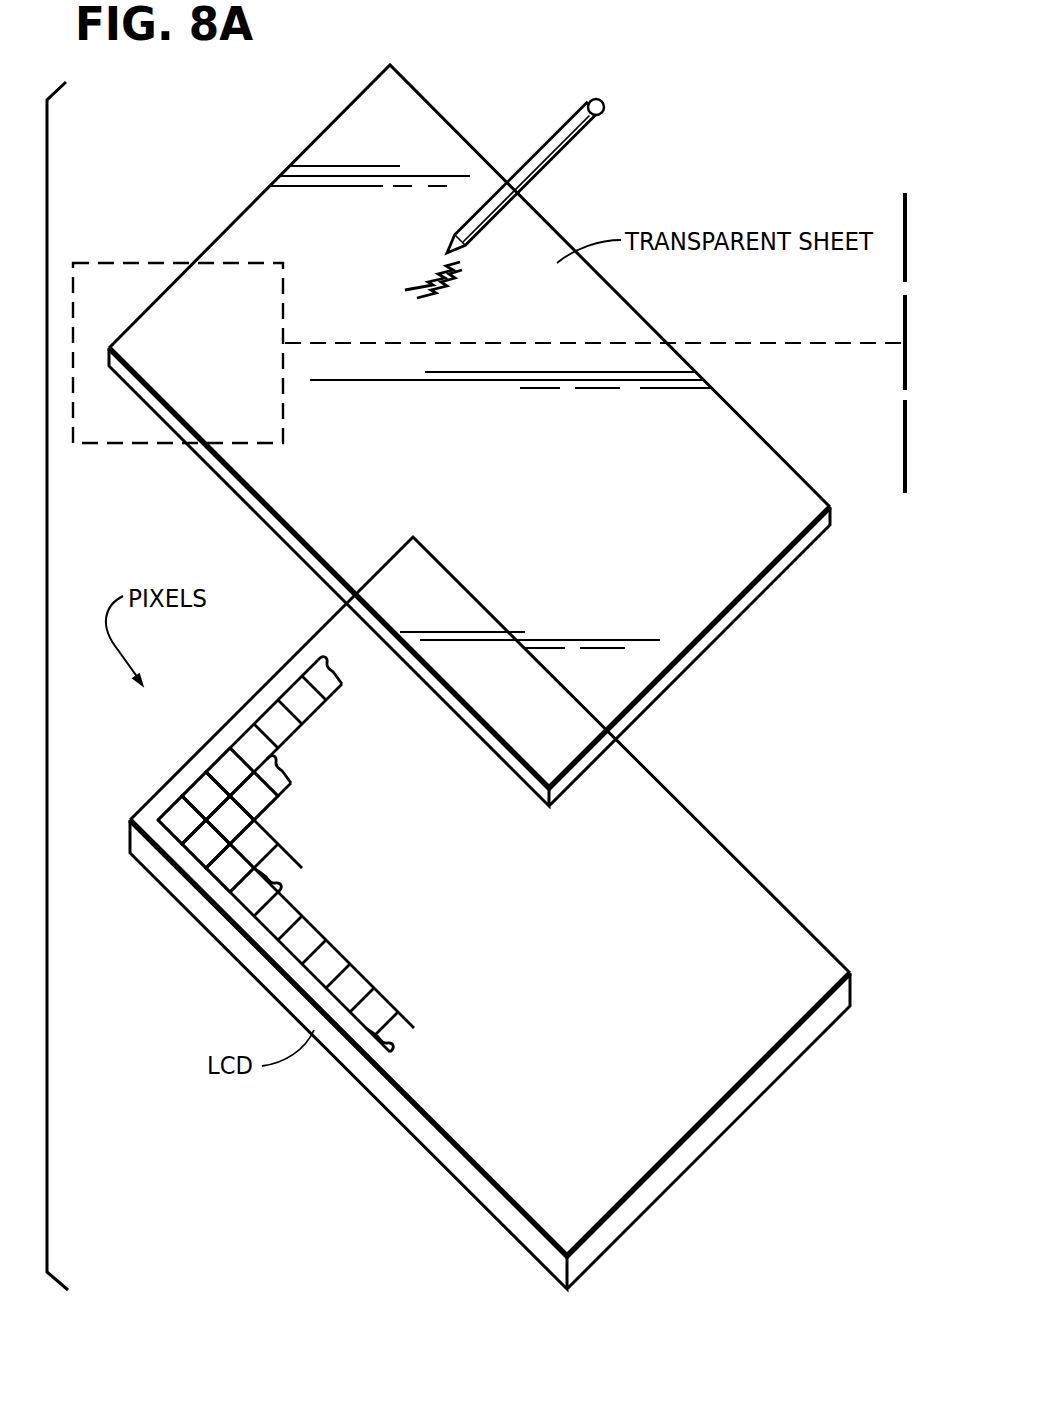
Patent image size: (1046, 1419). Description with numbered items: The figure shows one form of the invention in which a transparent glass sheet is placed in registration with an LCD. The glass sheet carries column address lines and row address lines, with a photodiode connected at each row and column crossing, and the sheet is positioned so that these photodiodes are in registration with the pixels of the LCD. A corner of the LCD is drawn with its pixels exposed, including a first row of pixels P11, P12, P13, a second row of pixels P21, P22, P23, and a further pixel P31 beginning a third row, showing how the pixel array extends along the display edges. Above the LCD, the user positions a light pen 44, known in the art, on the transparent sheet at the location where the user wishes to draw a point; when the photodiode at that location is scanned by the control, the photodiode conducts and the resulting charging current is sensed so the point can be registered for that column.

The light pen 44 is at (603, 102).
The pixel P11 is at (173, 817).
The pixel P12 is at (203, 790).
The pixel P13 is at (228, 765).
The pixel P21 is at (203, 850).
The pixel P22 is at (258, 800).
The pixel P23 is at (235, 823).
The pixel P31 is at (210, 890).